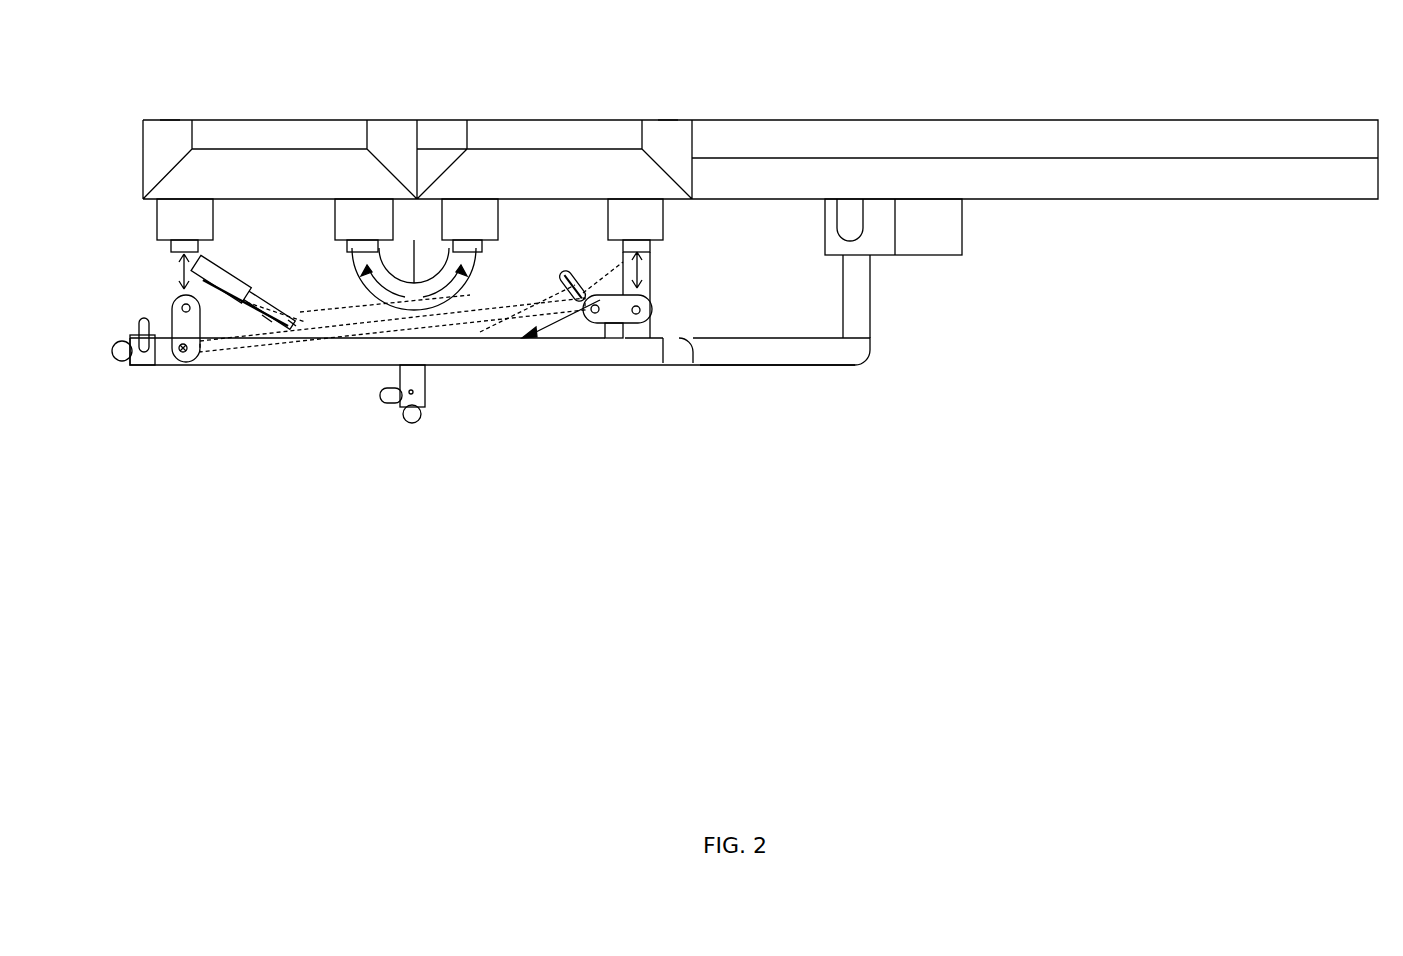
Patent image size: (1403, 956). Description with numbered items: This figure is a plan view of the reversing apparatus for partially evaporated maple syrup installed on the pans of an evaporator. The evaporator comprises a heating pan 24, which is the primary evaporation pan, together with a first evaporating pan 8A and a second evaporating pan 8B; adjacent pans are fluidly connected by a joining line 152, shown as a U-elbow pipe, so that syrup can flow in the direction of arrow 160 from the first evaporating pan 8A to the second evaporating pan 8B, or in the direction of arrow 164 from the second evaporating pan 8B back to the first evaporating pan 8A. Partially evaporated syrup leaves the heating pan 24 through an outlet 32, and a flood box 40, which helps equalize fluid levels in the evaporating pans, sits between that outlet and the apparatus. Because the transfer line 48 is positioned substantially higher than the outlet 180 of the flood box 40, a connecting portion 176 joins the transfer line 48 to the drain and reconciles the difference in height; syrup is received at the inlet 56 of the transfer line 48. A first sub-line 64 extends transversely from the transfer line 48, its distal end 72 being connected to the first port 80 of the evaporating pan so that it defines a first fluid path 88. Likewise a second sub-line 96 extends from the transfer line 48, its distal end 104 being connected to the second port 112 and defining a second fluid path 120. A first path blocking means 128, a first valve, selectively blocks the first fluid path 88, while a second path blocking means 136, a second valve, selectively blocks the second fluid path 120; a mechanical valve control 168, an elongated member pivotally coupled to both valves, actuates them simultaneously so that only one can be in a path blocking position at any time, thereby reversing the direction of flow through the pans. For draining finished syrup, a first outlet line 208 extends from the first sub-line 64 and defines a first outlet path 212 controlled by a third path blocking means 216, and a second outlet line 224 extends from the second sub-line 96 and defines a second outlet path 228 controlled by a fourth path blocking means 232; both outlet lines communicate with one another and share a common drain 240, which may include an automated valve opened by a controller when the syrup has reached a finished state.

The heating pan 24 is at (1333, 177).
The second evaporating pan 8B is at (168, 124).
The first evaporating pan 8A is at (667, 125).
The distal end of first sub-line 72 is at (655, 197).
The outlet 32 is at (898, 257).
The flood box 40 is at (930, 256).
The outlet of the flood box 180 is at (873, 262).
The joining line 152 is at (414, 283).
The arrow 160 is at (378, 265).
The arrow 164 is at (450, 265).
The second port 112 is at (172, 244).
The second fluid path 120 is at (180, 268).
The distal end of second sub-line 104 is at (183, 252).
The second sub-line 96 is at (172, 300).
The second path blocking means 136 is at (180, 352).
The transfer line 48 is at (547, 358).
The connecting portion 176 is at (797, 353).
The inlet 56 is at (667, 357).
The mechanical valve control 168 is at (362, 336).
The second outlet line 224 is at (312, 328).
The fourth path blocking means 232 is at (268, 320).
The second outlet path 228 is at (292, 318).
The first outlet line 208 is at (507, 333).
The first outlet path 212 is at (537, 342).
The common drain 240 is at (414, 425).
The first fluid path 88 is at (637, 250).
The first port 80 is at (642, 260).
The first sub-line 64 is at (640, 336).
The first path blocking means 128 is at (612, 312).
The third path blocking means 216 is at (585, 306).